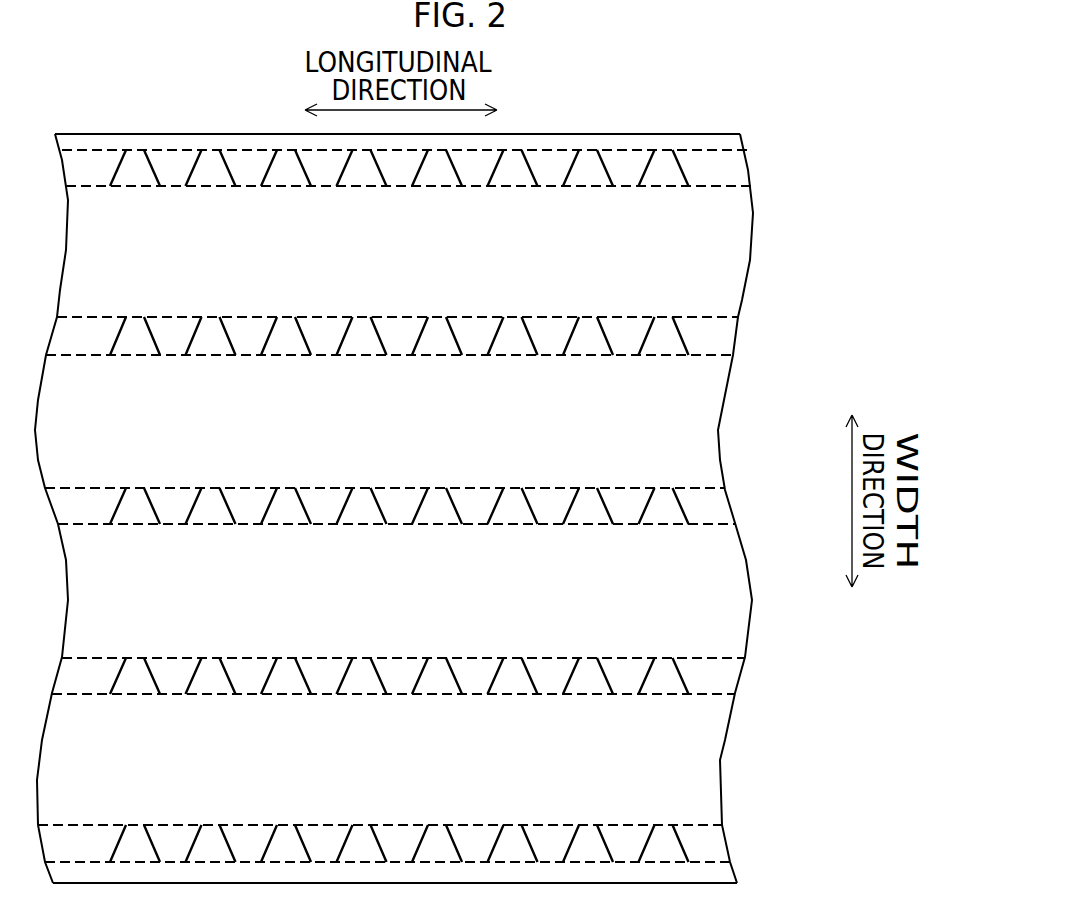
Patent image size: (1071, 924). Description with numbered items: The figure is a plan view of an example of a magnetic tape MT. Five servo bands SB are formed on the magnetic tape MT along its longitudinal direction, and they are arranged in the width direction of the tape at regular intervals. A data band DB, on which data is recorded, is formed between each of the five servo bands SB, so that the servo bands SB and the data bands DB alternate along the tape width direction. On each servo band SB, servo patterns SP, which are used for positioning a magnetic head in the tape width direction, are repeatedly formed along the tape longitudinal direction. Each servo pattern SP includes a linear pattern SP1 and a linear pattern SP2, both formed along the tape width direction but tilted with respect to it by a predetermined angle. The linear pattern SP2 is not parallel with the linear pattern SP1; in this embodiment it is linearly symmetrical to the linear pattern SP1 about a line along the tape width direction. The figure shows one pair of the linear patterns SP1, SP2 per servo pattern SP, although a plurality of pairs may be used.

The magnetic tape MT is at (662, 134).
The servo band SB is at (738, 167).
The data band DB is at (738, 255).
The servo pattern SP is at (158, 221).
The linear pattern SP1 is at (118, 174).
The linear pattern SP2 is at (151, 168).